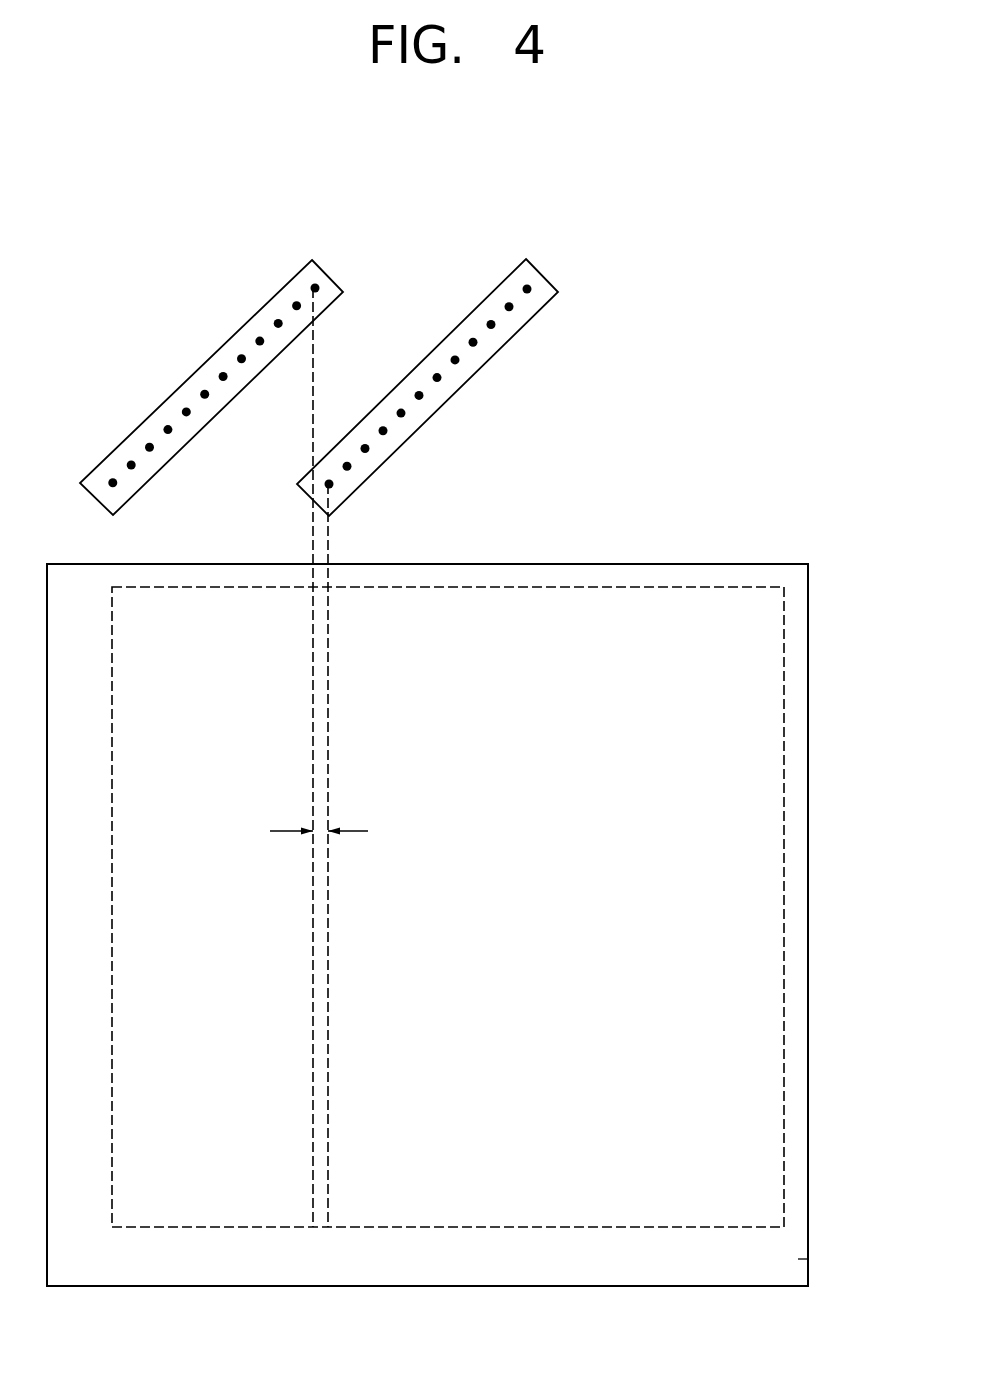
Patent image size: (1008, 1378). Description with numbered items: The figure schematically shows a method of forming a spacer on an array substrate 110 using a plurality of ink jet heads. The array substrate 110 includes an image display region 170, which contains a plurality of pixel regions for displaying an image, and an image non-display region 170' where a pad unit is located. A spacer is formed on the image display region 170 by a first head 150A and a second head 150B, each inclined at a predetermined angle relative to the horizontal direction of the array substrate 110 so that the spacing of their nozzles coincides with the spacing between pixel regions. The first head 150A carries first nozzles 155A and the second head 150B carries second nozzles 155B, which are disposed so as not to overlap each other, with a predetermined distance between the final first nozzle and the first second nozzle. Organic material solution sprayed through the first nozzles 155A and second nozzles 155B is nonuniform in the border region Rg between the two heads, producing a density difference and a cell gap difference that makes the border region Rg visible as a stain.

The array substrate 110 is at (808, 611).
The image display region 170 is at (501, 907).
The image non-display region 170' is at (847, 1259).
The first head 150A is at (203, 373).
The second head 150B is at (507, 290).
The first nozzles 155A is at (311, 285).
The second nozzles 155B is at (331, 487).
The border region Rg is at (320, 816).